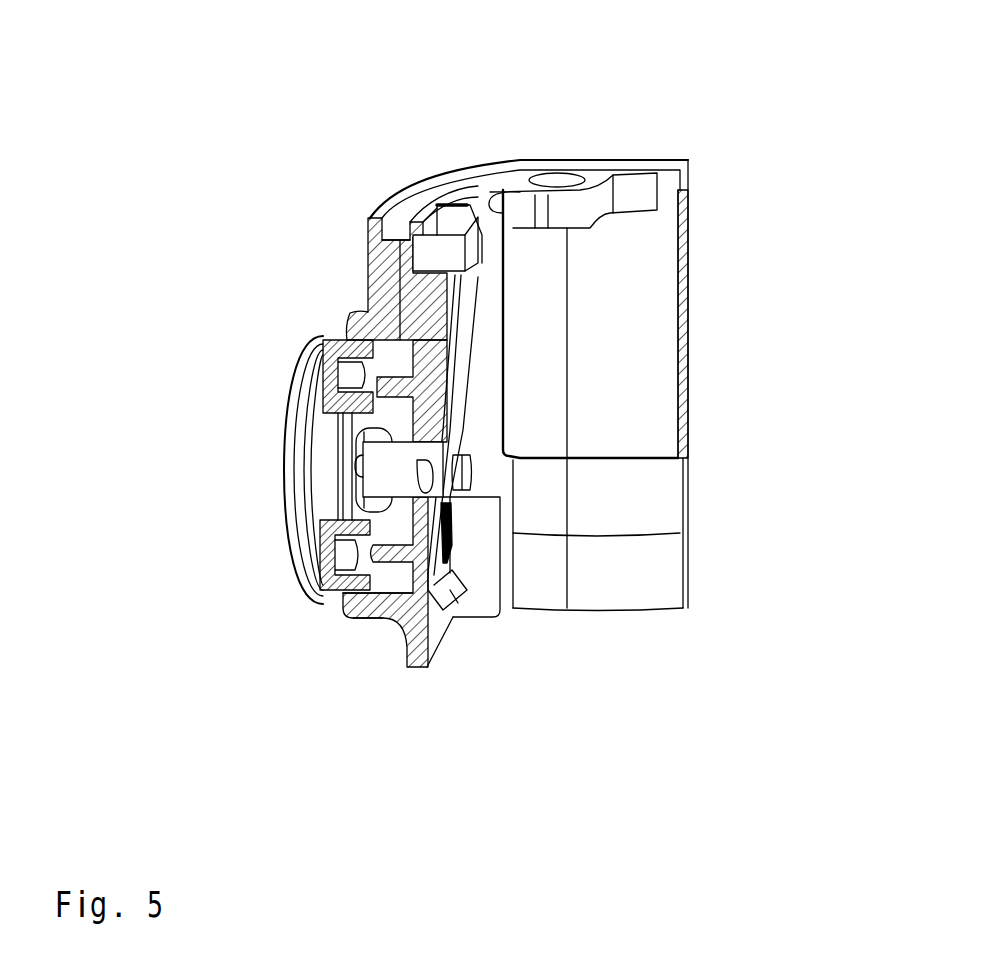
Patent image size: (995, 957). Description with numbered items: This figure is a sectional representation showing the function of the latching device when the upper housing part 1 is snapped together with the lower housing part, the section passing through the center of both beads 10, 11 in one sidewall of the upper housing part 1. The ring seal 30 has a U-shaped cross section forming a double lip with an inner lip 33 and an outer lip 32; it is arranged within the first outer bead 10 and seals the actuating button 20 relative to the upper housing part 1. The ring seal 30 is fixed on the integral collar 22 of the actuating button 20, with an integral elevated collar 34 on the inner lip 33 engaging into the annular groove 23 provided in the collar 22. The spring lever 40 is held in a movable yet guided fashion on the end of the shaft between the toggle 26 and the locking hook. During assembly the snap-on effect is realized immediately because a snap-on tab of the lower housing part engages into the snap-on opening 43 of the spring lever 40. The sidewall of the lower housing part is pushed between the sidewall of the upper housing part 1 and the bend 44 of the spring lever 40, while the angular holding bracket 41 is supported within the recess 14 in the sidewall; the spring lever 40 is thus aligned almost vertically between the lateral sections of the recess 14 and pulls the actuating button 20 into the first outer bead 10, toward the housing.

The upper housing part 1 is at (642, 158).
The first outer bead 10 is at (338, 320).
The bead 11 is at (402, 240).
The recess 14 is at (443, 250).
The angular holding bracket 41 is at (433, 222).
The spring lever 40 is at (467, 367).
The ring seal 30 is at (330, 330).
The outer lip 32 is at (357, 620).
The inner lip 33 is at (326, 588).
The elevated collar 34 is at (322, 553).
The collar 22 is at (327, 458).
The annular groove 23 is at (345, 498).
The toggle 26 is at (413, 470).
The actuating button 20 is at (290, 356).
The snap-on opening 43 is at (450, 543).
The bend 44 is at (458, 597).